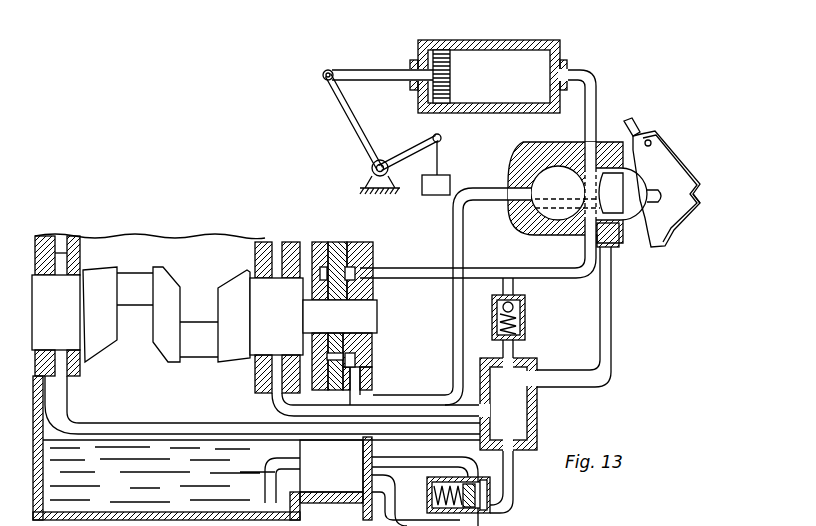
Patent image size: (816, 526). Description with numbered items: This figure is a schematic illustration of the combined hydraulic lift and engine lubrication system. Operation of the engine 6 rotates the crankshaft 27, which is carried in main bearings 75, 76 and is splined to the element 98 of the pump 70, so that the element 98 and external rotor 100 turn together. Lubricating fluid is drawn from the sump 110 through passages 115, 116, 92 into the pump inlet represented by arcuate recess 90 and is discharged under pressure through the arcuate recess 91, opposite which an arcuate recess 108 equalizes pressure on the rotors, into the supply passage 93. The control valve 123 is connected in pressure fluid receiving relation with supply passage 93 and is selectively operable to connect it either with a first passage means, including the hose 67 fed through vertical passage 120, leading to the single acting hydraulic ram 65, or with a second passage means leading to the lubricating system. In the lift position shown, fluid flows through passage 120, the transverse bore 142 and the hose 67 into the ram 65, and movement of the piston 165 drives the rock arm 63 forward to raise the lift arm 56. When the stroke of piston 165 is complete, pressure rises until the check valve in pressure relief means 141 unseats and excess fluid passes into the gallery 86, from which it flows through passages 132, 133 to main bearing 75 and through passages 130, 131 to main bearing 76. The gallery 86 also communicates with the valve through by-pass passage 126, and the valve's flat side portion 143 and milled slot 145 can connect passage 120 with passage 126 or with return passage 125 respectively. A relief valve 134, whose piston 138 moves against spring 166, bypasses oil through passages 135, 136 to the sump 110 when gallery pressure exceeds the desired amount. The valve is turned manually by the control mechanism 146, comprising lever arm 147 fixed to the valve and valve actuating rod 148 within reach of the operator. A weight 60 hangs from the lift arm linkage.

The engine 6 is at (192, 265).
The crankshaft 27 is at (167, 348).
The main bearing 75 is at (56, 351).
The main bearing 76 is at (292, 355).
The pump 70 is at (360, 304).
The external rotor 100 is at (368, 252).
The arcuate recess 91 is at (366, 289).
The arcuate recess 108 is at (340, 317).
The pump element 98 is at (335, 341).
The arcuate recess 90 is at (357, 358).
The passage 92 is at (362, 393).
The horizontal passage 130 is at (423, 406).
The vertical passage 131 is at (265, 392).
The vertical passage 133 is at (58, 403).
The horizontal passage 132 is at (196, 441).
The sump 110 is at (160, 500).
The passage 115 is at (262, 486).
The passage 116 is at (358, 478).
The passage 135 is at (458, 469).
The passage 136 is at (397, 516).
The spring 166 is at (432, 486).
The piston 138 is at (490, 472).
The relief valve 134 is at (511, 507).
The gallery 86 is at (528, 422).
The transverse passage 126 is at (613, 298).
The pressure relief means 141 is at (526, 317).
The supply passage 93 is at (483, 273).
The vertical passage 120 is at (583, 251).
The hose 67 is at (598, 80).
The hydraulic ram 65 is at (488, 65).
The piston 165 is at (450, 92).
The rock arm 63 is at (340, 113).
The lift arm 56 is at (418, 148).
The weight 60 is at (448, 183).
The transverse bore 142 is at (576, 190).
The milled slot 145 is at (579, 192).
The transverse passage 125 is at (452, 228).
The control valve 123 is at (630, 176).
The flat side portion 143 is at (643, 208).
The valve control mechanism 146 is at (683, 174).
The lever arm 147 is at (700, 193).
The valve actuating rod 148 is at (639, 128).